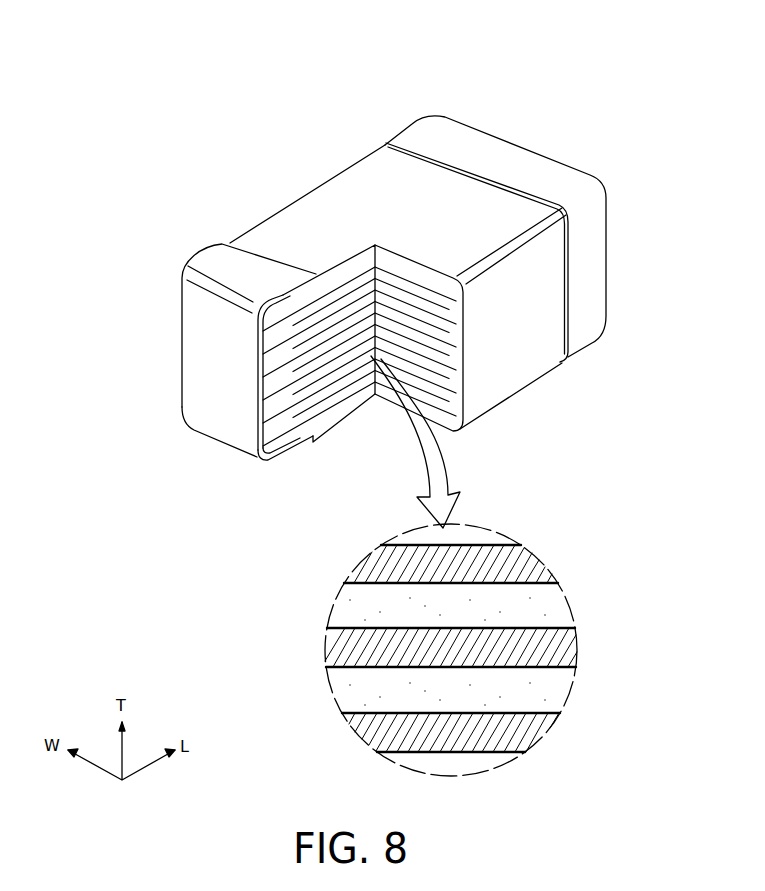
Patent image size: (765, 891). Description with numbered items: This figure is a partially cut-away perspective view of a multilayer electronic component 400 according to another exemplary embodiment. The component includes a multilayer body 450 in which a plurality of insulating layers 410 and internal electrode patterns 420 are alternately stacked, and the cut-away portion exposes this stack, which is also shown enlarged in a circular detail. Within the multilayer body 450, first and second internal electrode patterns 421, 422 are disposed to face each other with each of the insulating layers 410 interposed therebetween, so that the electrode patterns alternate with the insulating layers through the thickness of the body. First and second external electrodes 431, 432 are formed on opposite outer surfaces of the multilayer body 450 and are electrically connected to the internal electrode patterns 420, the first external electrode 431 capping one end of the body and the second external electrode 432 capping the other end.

The multilayer electronic component 400 is at (247, 38).
The insulating layers 410 is at (557, 607).
The internal electrode patterns 420 is at (240, 582).
The first internal electrode pattern 421 is at (366, 572).
The second internal electrode pattern 422 is at (343, 642).
The first external electrode 431 is at (220, 263).
The second external electrode 432 is at (436, 135).
The multilayer body 450 is at (333, 197).